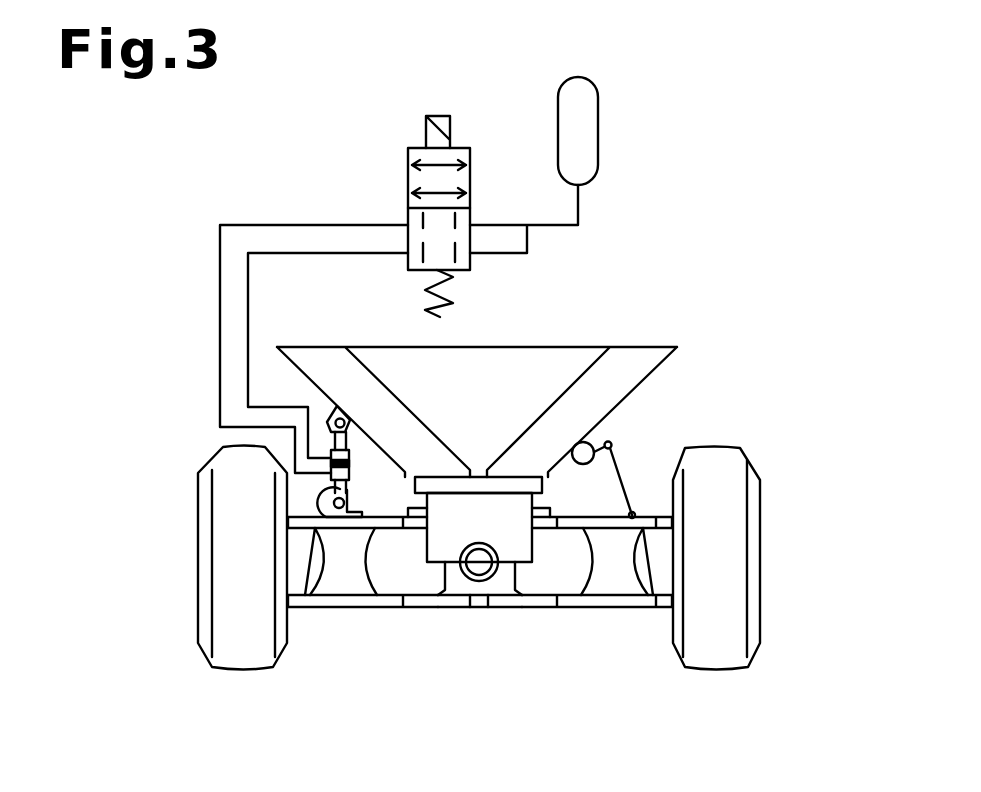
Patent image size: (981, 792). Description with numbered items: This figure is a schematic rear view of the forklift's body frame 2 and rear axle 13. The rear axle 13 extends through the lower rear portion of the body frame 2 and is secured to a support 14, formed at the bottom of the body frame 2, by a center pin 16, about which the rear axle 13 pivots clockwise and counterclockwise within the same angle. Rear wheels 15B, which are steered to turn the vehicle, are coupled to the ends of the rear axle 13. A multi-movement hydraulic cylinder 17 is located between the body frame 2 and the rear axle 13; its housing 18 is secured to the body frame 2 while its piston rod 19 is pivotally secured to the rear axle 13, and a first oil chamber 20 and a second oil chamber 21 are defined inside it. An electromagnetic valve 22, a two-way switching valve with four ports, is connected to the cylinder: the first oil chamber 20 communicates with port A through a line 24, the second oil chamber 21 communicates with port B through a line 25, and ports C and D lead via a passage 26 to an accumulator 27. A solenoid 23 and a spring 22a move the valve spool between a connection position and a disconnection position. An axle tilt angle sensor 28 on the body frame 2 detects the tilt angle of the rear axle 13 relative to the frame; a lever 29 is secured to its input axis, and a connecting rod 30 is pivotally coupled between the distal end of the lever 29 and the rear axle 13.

The body frame 2 is at (593, 346).
The rear axle 13 is at (556, 650).
The support 14 is at (532, 547).
The rear wheels 15B is at (243, 665).
The center pin 16 is at (461, 576).
The multi-movement hydraulic cylinder 17 is at (349, 482).
The housing 18 is at (348, 444).
The piston rod 19 is at (330, 518).
The first oil chamber 20 is at (350, 460).
The second oil chamber 21 is at (333, 480).
The electromagnetic valve 22 is at (408, 172).
The spring 22a is at (440, 317).
The solenoid 23 is at (451, 125).
The line 24 is at (248, 285).
The line 25 is at (220, 290).
The oil passage 26 is at (557, 228).
The accumulator 27 is at (599, 108).
The axle tilt angle sensor 28 is at (578, 465).
The lever 29 is at (612, 440).
The connecting rod 30 is at (637, 495).